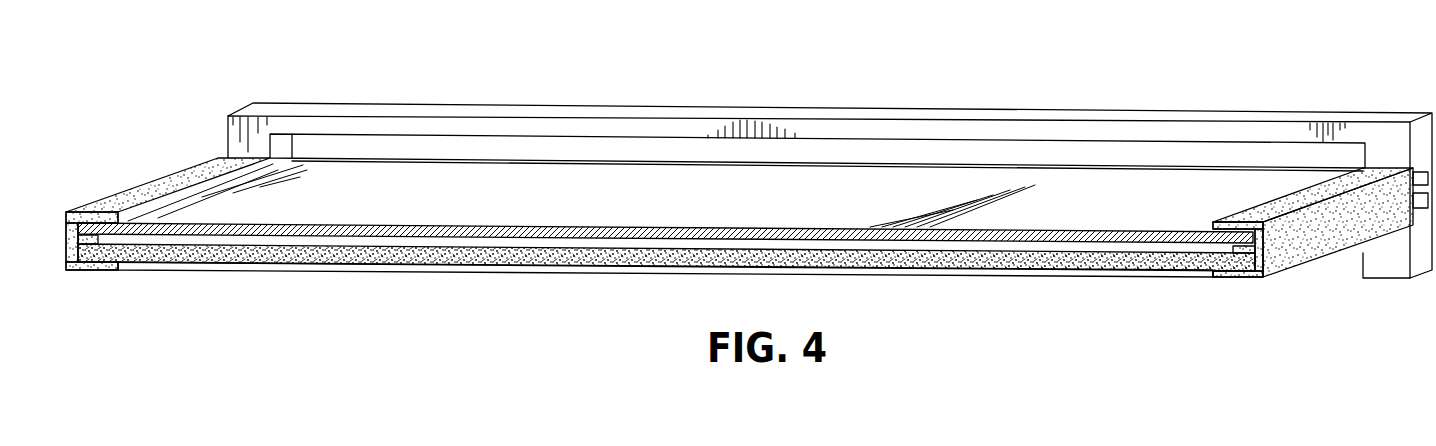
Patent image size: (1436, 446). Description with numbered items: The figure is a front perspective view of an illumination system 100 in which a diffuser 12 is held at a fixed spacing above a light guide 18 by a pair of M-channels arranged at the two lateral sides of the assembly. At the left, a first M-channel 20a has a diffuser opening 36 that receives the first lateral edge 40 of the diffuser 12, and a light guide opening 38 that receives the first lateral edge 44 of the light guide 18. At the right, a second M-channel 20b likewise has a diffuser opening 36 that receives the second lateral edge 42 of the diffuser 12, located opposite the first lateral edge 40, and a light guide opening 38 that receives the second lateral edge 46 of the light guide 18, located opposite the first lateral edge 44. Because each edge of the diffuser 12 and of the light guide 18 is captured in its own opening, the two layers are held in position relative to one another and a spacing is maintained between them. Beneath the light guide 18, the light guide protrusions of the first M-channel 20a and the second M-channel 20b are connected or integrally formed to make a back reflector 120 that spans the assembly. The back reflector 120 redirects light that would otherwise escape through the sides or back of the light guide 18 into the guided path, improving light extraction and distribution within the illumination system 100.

The illumination system 100 is at (830, 27).
The diffuser 12 is at (577, 232).
The light guide 18 is at (563, 257).
The back reflector 120 is at (822, 272).
The first M-channel 20a is at (170, 180).
The second M-channel 20b is at (1315, 233).
The diffuser opening 36 is at (97, 222).
The light guide opening 38 is at (86, 264).
The first lateral edge of the diffuser 40 is at (102, 236).
The second lateral edge of the diffuser 42 is at (1210, 236).
The first lateral edge of the light guide 44 is at (92, 246).
The second lateral edge of the light guide 46 is at (1230, 257).